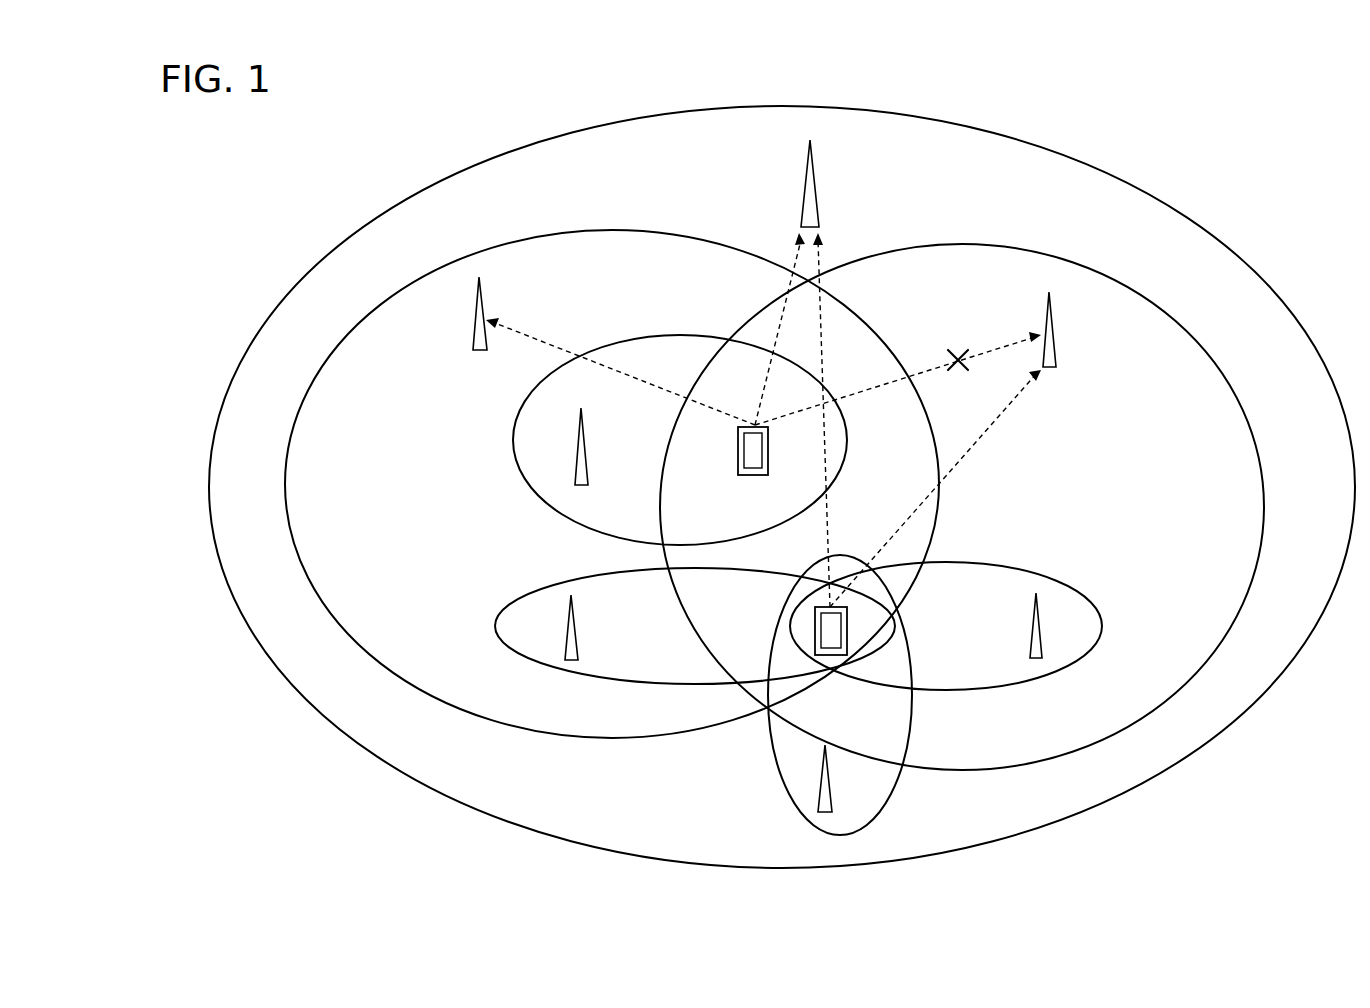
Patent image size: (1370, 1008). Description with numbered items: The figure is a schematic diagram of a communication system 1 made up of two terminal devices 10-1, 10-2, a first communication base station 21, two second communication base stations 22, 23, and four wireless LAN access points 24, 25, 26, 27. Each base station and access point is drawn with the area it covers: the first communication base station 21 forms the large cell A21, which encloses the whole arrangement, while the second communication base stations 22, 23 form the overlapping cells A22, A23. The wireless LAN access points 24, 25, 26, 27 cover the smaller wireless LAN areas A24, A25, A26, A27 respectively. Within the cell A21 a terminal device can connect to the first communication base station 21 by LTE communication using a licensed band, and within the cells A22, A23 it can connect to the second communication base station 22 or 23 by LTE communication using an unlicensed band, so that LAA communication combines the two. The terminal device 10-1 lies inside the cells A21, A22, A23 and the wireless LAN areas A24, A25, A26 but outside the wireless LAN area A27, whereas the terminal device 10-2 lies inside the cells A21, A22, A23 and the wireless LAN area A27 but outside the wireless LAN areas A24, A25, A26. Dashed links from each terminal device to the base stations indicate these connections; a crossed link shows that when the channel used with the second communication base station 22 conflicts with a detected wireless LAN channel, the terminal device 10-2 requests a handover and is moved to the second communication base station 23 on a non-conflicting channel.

The communication system 1 is at (1214, 170).
The terminal device 10-1 is at (812, 626).
The terminal device 10-2 is at (750, 480).
The first communication base station 21 is at (816, 196).
The second communication base station 22 is at (1058, 352).
The second communication base station 23 is at (472, 332).
The wireless LAN access point 24 is at (580, 640).
The wireless LAN access point 25 is at (830, 772).
The wireless LAN access point 26 is at (1030, 642).
The wireless LAN access point 27 is at (589, 455).
The cell A21 is at (1254, 262).
The cell A22 is at (1208, 348).
The cell A23 is at (680, 237).
The wireless LAN area A24 is at (520, 655).
The wireless LAN area A25 is at (776, 770).
The wireless LAN area A26 is at (1096, 602).
The wireless LAN area A27 is at (527, 496).